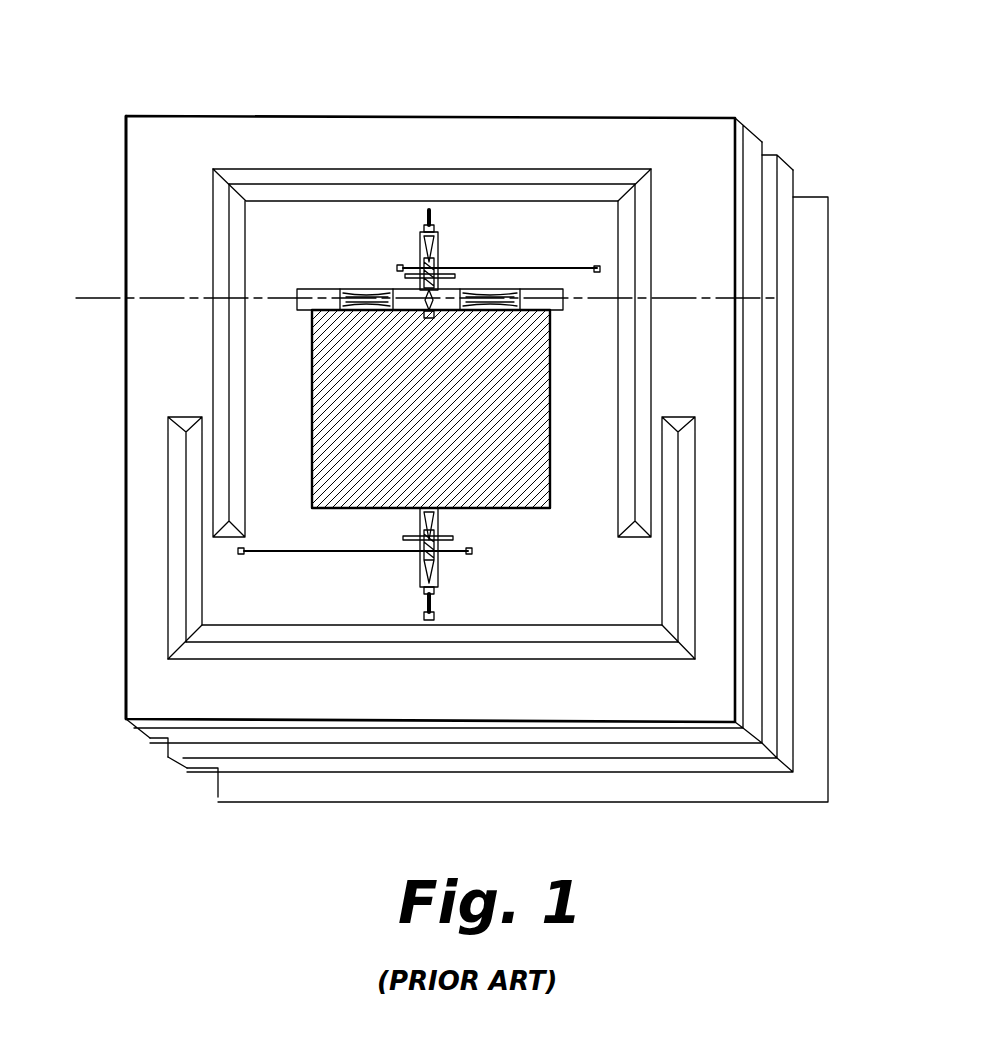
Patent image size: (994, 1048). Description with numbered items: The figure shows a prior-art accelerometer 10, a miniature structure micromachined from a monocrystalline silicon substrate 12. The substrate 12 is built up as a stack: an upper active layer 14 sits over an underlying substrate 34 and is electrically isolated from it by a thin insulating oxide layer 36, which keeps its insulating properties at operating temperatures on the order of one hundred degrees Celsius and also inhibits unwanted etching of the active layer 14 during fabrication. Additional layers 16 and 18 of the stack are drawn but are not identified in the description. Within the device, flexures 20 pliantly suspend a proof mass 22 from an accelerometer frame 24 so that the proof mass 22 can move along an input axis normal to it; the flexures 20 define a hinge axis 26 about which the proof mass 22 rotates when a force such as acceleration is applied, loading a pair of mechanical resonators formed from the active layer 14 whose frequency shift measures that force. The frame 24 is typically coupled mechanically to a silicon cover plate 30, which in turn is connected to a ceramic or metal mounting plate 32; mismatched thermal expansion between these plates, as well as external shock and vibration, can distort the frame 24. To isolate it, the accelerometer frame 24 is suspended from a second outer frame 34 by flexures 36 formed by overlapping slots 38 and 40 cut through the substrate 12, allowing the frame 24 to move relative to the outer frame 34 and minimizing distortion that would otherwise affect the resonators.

The accelerometer 10 is at (741, 26).
The substrate 12 is at (629, 117).
The active layer 14 is at (735, 117).
The third plate 16 is at (762, 143).
The intermediate plate 18 is at (752, 130).
The flexures 20 is at (352, 289).
The proof mass 22 is at (309, 437).
The accelerometer frame 24 is at (503, 201).
The hinge axis 26 is at (93, 296).
The silicon cover plate 30 is at (793, 170).
The mounting plate 32 is at (806, 197).
The outer frame 34 is at (126, 411).
The flexures 36 is at (472, 561).
The slot 38 is at (245, 642).
The slot 40 is at (432, 301).